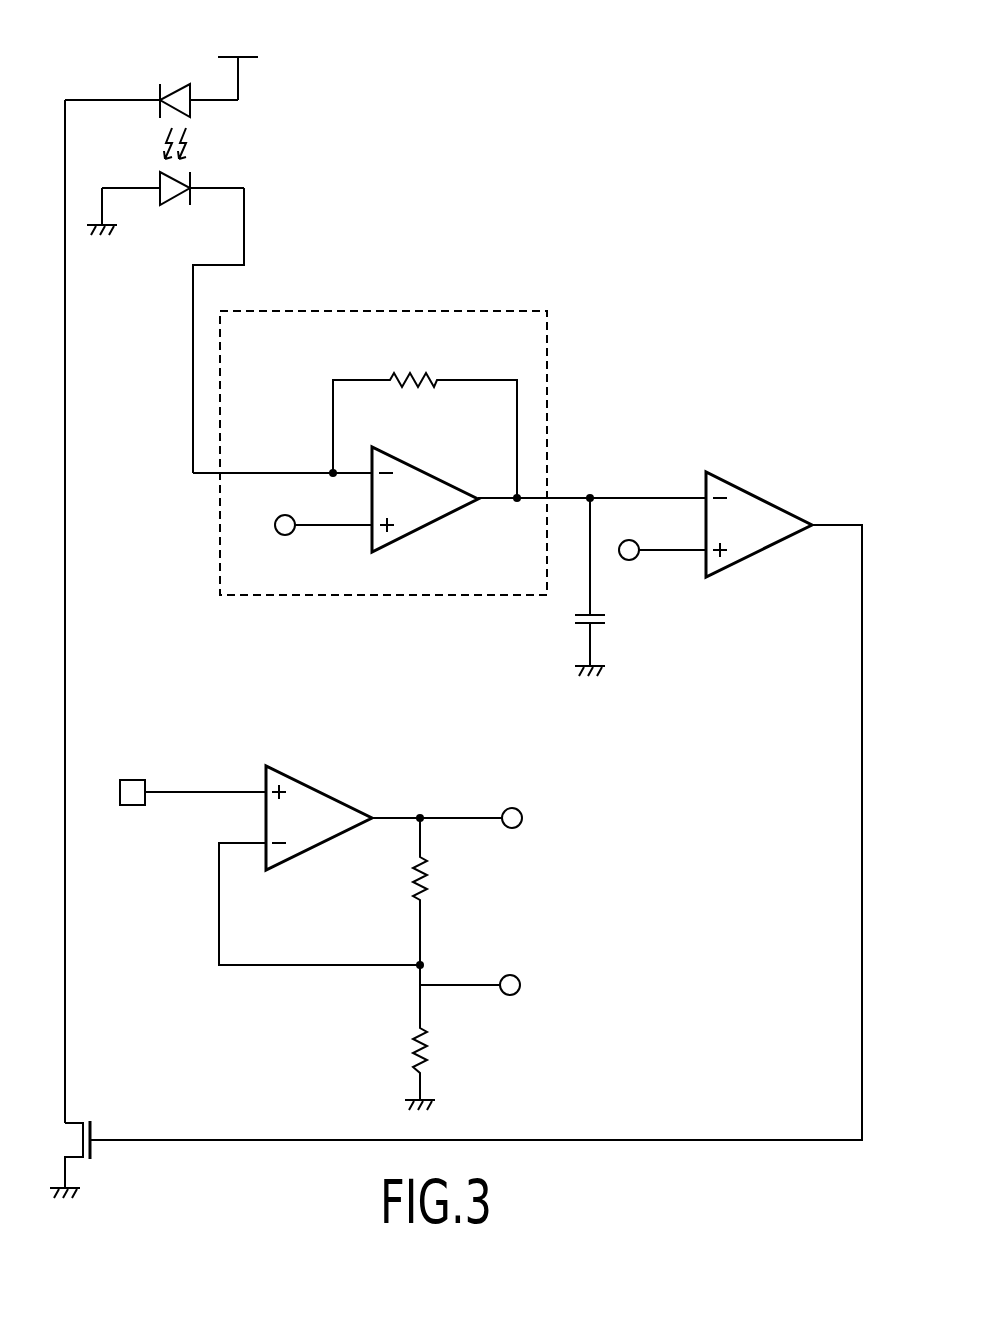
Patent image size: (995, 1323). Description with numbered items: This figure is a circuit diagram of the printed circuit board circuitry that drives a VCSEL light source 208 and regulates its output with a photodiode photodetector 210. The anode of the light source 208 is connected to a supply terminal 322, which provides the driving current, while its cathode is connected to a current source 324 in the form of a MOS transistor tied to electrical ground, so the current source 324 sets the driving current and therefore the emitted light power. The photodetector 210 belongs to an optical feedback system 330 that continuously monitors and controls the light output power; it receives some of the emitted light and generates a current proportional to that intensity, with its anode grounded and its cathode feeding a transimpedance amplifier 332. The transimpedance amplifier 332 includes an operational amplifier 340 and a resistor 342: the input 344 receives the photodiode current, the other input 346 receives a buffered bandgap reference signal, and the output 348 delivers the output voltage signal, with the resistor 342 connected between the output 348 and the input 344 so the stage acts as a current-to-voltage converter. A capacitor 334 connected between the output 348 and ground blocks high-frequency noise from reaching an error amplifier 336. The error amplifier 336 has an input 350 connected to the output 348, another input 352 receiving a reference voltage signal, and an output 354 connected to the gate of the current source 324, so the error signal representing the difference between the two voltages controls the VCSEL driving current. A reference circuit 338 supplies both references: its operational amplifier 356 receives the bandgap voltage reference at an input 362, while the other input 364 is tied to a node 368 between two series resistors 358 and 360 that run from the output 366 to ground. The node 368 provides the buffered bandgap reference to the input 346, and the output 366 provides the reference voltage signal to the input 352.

The light source 208 is at (180, 83).
The photodetector 210 is at (172, 204).
The supply terminal 322 is at (249, 55).
The current source 324 is at (93, 1128).
The optical feedback system 330 is at (487, 238).
The transimpedance amplifier 332 is at (547, 342).
The capacitor 334 is at (578, 623).
The error amplifier 336 is at (758, 492).
The reference circuit 338 is at (332, 707).
The operational amplifier 340 is at (420, 463).
The resistor 342 is at (410, 373).
The input 344 is at (275, 472).
The input 346 is at (292, 516).
The output 348 is at (533, 503).
The input 350 is at (630, 496).
The input 352 is at (637, 540).
The output 354 is at (838, 523).
The operational amplifier 356 is at (317, 788).
The resistor 358 is at (428, 867).
The resistor 360 is at (425, 1050).
The input 362 is at (210, 790).
The input 364 is at (237, 843).
The output 366 is at (402, 821).
The node 368 is at (417, 961).